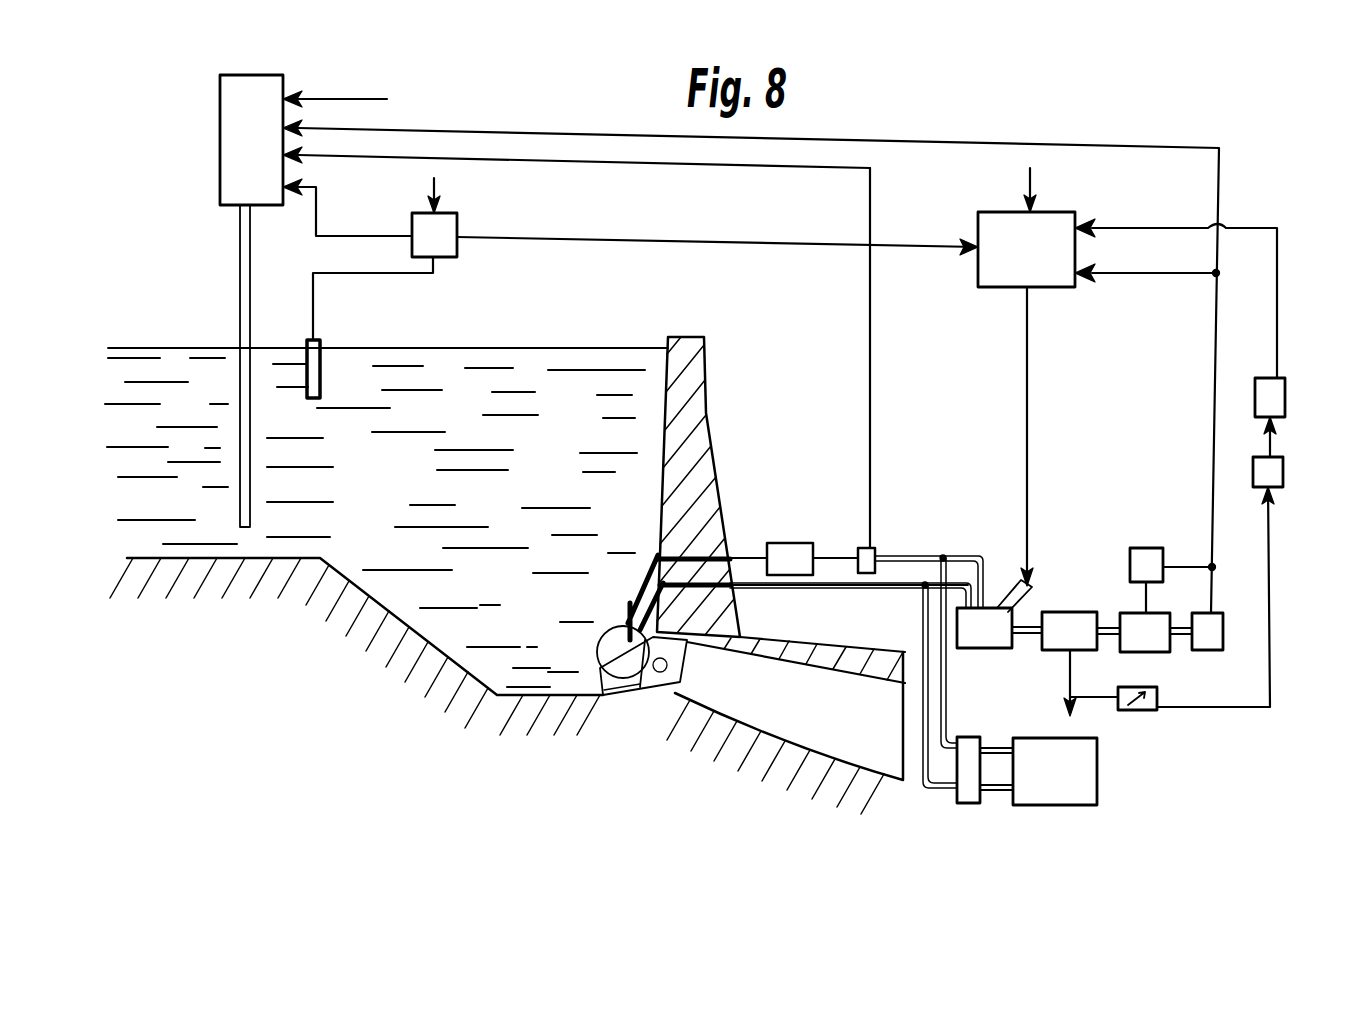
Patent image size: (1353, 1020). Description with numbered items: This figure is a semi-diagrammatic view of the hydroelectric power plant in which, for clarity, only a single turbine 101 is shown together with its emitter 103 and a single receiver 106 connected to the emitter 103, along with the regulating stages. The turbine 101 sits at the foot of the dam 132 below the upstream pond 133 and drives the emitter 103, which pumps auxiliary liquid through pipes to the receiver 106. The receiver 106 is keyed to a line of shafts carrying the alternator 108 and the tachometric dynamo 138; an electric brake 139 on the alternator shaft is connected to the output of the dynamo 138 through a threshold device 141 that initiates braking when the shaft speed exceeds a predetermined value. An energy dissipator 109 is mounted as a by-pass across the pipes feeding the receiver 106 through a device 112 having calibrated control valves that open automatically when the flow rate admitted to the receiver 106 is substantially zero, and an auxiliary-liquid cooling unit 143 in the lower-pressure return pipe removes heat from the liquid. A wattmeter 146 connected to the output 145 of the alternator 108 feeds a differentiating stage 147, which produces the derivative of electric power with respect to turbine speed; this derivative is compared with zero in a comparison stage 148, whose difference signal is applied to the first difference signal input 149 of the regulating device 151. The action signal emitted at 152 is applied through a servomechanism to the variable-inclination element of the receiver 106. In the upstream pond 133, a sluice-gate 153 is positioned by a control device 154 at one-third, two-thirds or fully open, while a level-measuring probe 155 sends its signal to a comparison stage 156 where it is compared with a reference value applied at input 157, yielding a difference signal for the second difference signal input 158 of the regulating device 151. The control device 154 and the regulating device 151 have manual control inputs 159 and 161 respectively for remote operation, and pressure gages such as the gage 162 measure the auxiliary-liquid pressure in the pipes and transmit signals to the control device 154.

The turbine 101 is at (685, 680).
The emitter 103 is at (598, 645).
The receiver 106 is at (990, 648).
The alternator 108 is at (1062, 620).
The energy dissipator 109 is at (1097, 775).
The device having calibrated control valves 112 is at (965, 742).
The dam 132 is at (700, 386).
The upstream pond 133 is at (190, 357).
The tachometric dynamo 138 is at (1215, 652).
The electric brake 139 is at (1150, 652).
The threshold device 141 is at (1142, 560).
The auxiliary-liquid cooling unit 143 is at (784, 555).
The output of the alternator 145 is at (1070, 652).
The wattmeter 146 is at (1140, 710).
The differentiating stage 147 is at (1253, 476).
The comparison stage 148 is at (1255, 391).
The first difference signal input 149 is at (1085, 225).
The regulating device 151 is at (988, 215).
The action signal output 152 is at (1027, 292).
The sluice-gate 153 is at (240, 383).
The control device 154 is at (220, 142).
The level-measuring probe 155 is at (320, 368).
The comparison stage 156 is at (455, 255).
The reference value input 157 is at (441, 212).
The second difference signal input 158 is at (975, 255).
The manual control input 159 is at (291, 91).
The manual control input 161 is at (1036, 210).
The pressure gage 162 is at (881, 552).